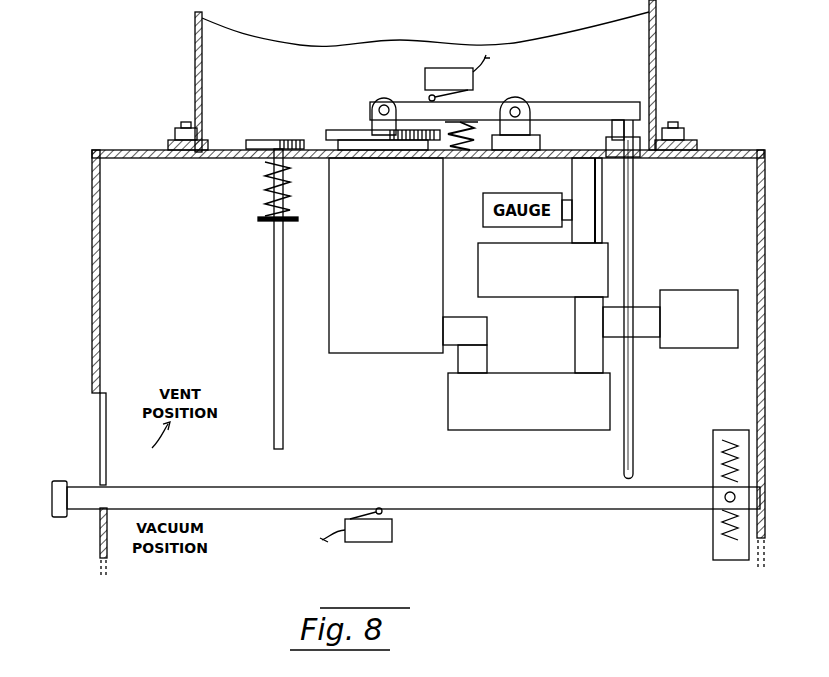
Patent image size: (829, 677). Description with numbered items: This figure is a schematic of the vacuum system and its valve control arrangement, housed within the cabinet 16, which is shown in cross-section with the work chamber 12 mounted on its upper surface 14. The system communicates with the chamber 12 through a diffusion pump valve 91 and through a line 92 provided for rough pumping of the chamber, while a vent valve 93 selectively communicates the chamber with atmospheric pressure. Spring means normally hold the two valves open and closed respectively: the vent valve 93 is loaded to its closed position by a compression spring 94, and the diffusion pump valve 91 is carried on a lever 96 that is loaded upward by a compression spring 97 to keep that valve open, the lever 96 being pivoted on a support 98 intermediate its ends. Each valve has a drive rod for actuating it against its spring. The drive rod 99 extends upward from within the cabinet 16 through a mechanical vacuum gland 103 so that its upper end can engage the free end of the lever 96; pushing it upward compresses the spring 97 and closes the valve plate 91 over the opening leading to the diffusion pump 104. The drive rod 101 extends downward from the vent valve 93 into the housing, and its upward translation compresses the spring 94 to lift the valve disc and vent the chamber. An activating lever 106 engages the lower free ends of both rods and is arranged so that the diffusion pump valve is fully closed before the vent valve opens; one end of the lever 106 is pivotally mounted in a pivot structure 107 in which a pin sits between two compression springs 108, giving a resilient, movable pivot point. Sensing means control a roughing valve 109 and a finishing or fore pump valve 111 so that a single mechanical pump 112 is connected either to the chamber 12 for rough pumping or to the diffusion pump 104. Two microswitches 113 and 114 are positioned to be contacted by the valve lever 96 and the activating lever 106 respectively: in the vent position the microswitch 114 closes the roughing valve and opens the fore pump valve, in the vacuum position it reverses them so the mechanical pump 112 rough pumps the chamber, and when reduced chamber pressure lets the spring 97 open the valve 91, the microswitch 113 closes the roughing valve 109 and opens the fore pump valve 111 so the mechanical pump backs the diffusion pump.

The work chamber 12 is at (656, 55).
The upper surface 14 is at (114, 150).
The cabinet 16 is at (92, 256).
The diffusion pump valve 91 is at (340, 130).
The line 92 is at (575, 172).
The vent valve 93 is at (263, 140).
The compression spring 94 is at (265, 192).
The lever 96 is at (576, 102).
The compression spring 97 is at (472, 150).
The support 98 is at (515, 105).
The drive rod 99 is at (625, 262).
The drive rod 101 is at (274, 302).
The mechanical vacuum gland 103 is at (640, 152).
The diffusion pump 104 is at (376, 335).
The activating lever 106 is at (315, 487).
The pivot structure 107 is at (722, 430).
The compression springs 108 is at (722, 455).
The roughing valve 109 is at (548, 297).
The finishing or fore pump valve 111 is at (530, 430).
The mechanical pump 112 is at (688, 290).
The microswitch 113 is at (425, 78).
The microswitch 114 is at (370, 532).